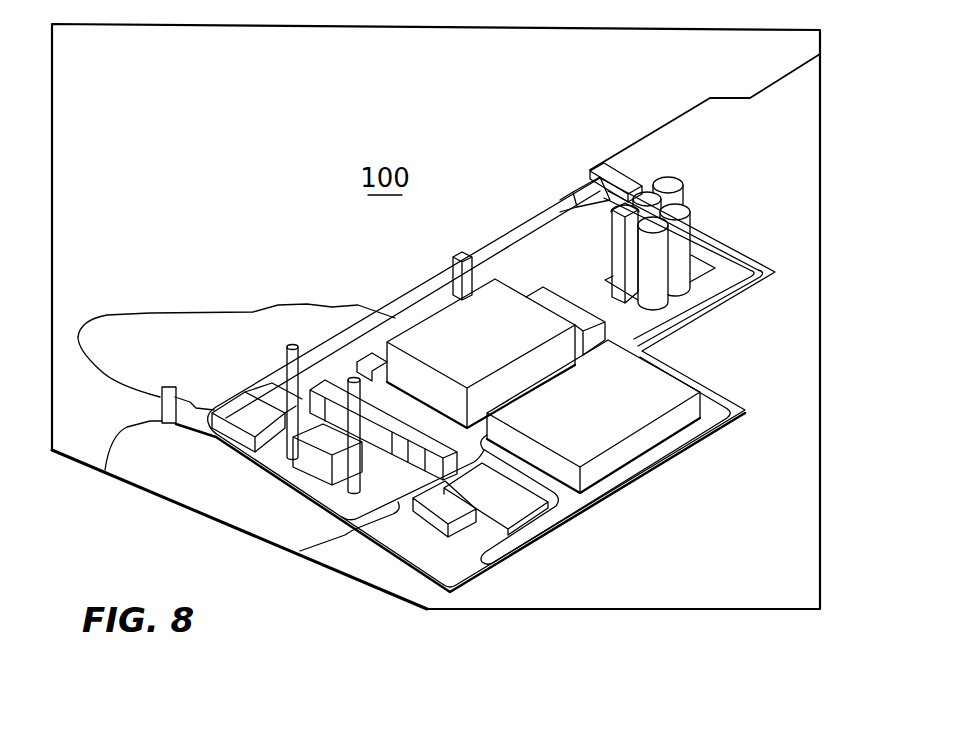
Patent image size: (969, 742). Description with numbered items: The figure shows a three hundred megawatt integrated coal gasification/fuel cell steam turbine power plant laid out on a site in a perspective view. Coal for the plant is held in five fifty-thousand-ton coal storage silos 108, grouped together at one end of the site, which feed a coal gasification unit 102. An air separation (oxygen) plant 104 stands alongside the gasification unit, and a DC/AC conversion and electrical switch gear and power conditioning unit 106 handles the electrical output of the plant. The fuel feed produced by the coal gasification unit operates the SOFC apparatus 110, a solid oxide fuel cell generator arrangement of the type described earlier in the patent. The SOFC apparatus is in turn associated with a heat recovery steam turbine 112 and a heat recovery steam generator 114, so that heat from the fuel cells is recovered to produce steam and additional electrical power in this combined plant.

The coal gasification unit 102 is at (420, 342).
The air separation (oxygen) plant 104 is at (605, 438).
The DC/AC conversion and electrical switch gear and power conditioning unit 106 is at (517, 513).
The coal storage silos 108 is at (678, 210).
The SOFC apparatus 110 is at (333, 384).
The heat recovery steam turbine 112 is at (315, 462).
The heat recovery steam generator 114 is at (370, 478).